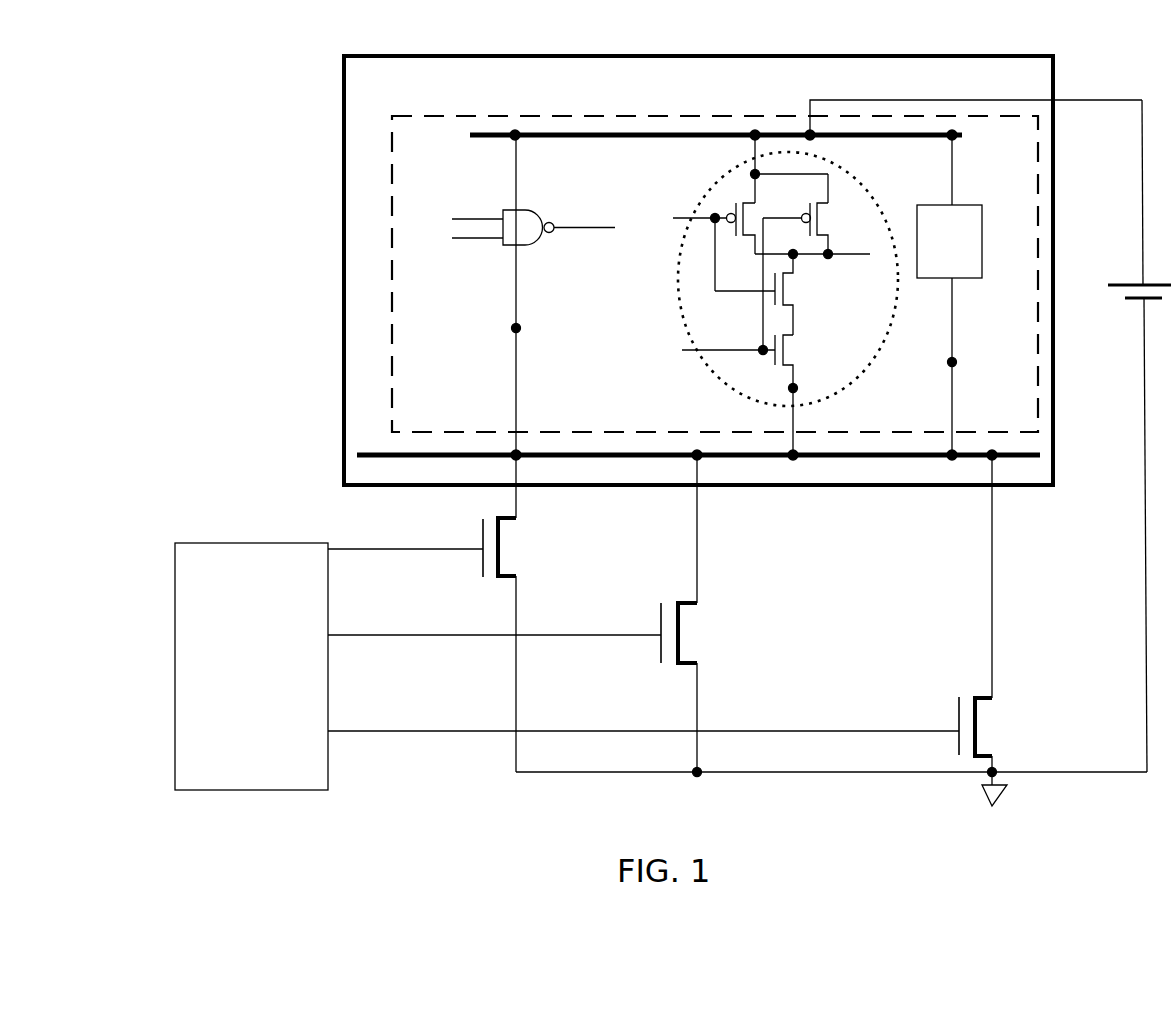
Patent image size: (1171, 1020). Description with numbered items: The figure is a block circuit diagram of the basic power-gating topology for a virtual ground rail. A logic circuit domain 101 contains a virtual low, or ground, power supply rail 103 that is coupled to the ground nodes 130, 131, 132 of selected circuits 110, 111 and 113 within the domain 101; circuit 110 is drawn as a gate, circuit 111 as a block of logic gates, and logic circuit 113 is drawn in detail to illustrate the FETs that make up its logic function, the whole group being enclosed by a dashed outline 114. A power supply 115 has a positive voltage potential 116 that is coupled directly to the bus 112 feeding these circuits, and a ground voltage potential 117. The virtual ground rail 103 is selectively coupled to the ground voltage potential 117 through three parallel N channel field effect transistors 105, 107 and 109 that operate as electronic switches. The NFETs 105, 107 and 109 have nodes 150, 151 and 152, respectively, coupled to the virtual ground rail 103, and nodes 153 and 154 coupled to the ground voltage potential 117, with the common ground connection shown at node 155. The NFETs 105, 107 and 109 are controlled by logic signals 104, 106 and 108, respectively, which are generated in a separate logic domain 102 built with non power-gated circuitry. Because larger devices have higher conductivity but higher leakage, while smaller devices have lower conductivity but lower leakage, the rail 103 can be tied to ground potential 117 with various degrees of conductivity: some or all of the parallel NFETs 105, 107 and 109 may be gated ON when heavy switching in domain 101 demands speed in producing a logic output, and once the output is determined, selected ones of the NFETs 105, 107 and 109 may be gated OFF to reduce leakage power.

The logic circuit domain 101 is at (698, 270).
The logic domain 102 is at (251, 666).
The virtual ground rail 103 is at (598, 452).
The logic signal 104 is at (410, 547).
The N channel field effect transistor 105 is at (503, 560).
The logic signal 106 is at (445, 634).
The N channel field effect transistor 107 is at (697, 630).
The logic signal 108 is at (652, 732).
The N channel field effect transistor 109 is at (993, 712).
The selected circuit 110 is at (503, 210).
The selected circuit 111 is at (985, 202).
The bus 112 is at (580, 140).
The logic circuit 113 is at (867, 370).
The functional block 114 is at (390, 119).
The power supply 115 is at (1130, 283).
The positive voltage potential 116 is at (1078, 100).
The ground voltage potential 117 is at (1087, 768).
The ground node 130 is at (521, 325).
The ground node 131 is at (800, 383).
The ground node 132 is at (956, 359).
The node 150 is at (517, 498).
The node 151 is at (697, 495).
The node 152 is at (992, 498).
The node 153 is at (519, 650).
The node 154 is at (700, 678).
The ground terminal 155 is at (994, 770).